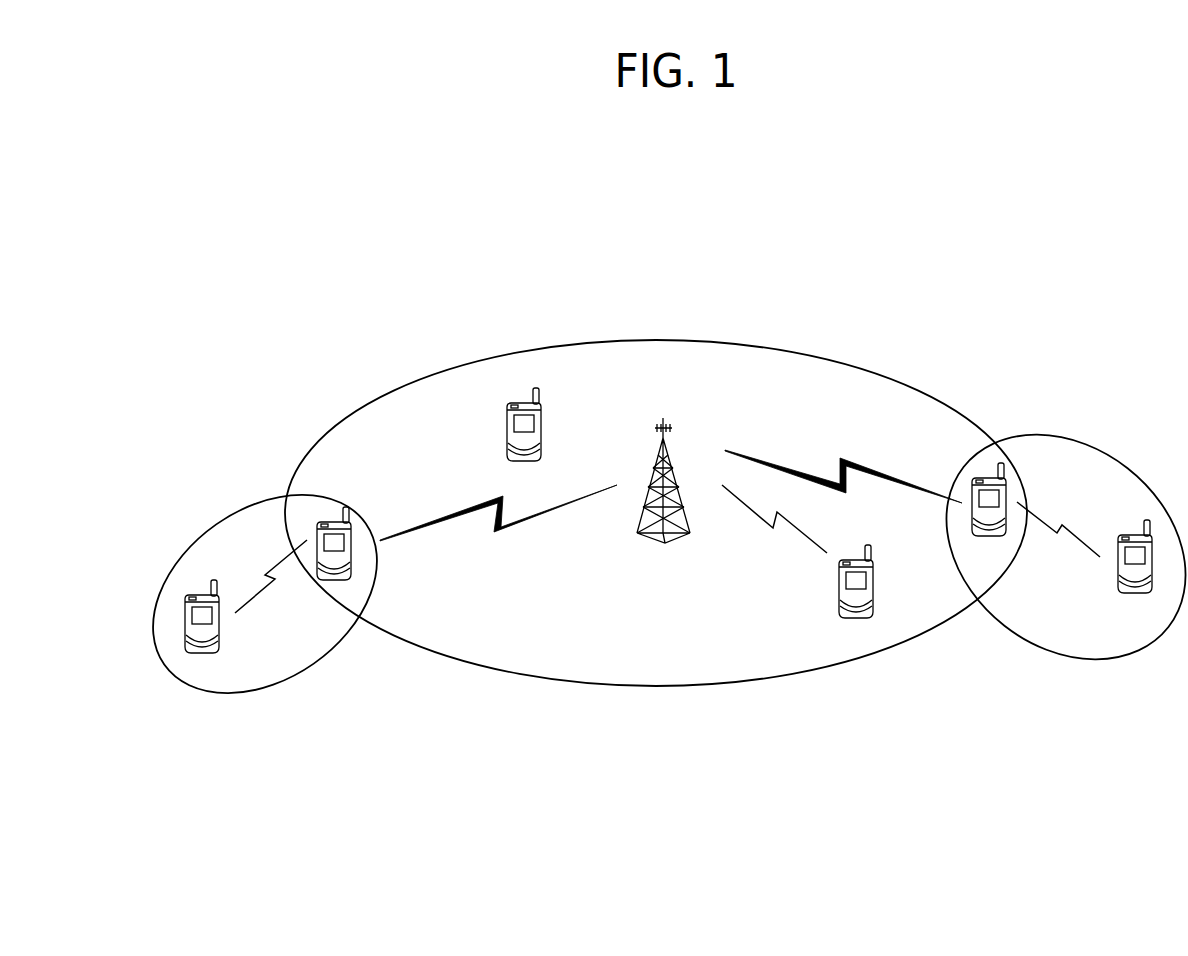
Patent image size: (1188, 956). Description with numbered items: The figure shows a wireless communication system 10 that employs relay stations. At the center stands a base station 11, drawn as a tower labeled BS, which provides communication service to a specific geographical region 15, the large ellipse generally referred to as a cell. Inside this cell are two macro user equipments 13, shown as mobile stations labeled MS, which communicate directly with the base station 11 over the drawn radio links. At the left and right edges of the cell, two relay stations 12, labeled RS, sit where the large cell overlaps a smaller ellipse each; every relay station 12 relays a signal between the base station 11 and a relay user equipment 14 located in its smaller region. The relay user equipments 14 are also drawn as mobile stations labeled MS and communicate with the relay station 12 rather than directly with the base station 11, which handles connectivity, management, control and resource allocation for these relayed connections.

The wireless communication system 10 is at (833, 326).
The base station 11 is at (668, 449).
The relay station 12 is at (351, 531).
The macro user equipment 13 is at (507, 436).
The relay user equipment 14 is at (219, 633).
The geographical region 15 is at (636, 340).